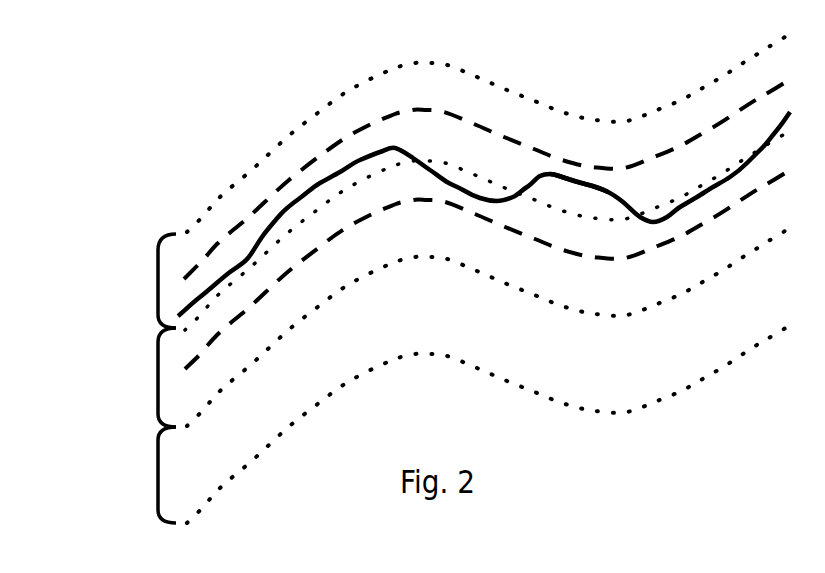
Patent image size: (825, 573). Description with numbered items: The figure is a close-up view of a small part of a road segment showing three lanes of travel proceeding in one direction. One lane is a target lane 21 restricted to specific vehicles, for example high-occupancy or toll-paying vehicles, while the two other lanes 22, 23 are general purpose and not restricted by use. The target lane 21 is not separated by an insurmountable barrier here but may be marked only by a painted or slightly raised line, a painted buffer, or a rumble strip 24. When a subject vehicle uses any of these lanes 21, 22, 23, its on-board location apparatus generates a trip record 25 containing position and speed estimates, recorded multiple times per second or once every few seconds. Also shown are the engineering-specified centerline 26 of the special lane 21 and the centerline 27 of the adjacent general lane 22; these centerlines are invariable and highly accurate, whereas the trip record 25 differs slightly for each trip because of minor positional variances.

The target lane 21 is at (158, 282).
The general lane 22 is at (158, 380).
The general lane 23 is at (158, 477).
The rumble strip 24 is at (484, 214).
The trip record 25 is at (579, 190).
The centerline 26 is at (487, 179).
The centerline 27 is at (488, 269).